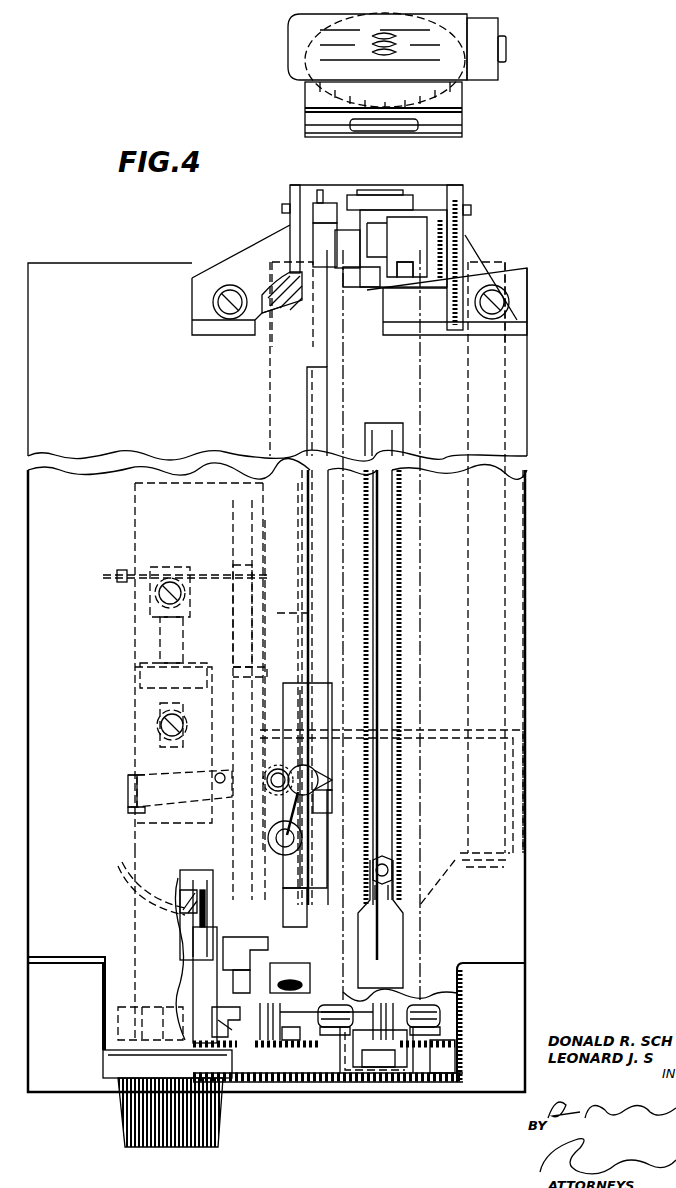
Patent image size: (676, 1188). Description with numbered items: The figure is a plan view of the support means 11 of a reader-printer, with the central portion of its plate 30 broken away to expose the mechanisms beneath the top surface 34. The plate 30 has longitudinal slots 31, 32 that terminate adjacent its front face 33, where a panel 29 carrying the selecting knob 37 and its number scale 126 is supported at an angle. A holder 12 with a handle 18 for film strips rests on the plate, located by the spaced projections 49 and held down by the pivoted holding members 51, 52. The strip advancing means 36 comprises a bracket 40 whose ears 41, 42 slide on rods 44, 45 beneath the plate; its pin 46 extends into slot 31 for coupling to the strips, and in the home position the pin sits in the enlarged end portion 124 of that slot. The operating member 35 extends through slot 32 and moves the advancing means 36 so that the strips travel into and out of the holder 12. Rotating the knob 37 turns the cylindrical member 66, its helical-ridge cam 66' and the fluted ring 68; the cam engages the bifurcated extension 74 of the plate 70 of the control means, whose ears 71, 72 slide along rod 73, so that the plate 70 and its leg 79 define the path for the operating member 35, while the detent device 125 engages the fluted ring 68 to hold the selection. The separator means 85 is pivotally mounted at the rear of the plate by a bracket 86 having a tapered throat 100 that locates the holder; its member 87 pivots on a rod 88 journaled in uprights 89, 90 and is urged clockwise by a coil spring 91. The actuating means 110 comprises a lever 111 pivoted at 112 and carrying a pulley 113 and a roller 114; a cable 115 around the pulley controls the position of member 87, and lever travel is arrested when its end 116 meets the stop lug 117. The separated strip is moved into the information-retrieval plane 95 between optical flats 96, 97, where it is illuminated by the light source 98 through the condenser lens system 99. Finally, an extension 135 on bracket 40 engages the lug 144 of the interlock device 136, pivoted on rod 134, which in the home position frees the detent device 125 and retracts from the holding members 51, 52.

The support means 11 is at (530, 512).
The holder 12 is at (402, 672).
The handle portion 18 is at (385, 1082).
The panel 29 is at (440, 1082).
The plate 30 is at (495, 912).
The slot 31 is at (388, 500).
The slot 32 is at (333, 503).
The front face 33 is at (463, 1062).
The top surface 34 is at (158, 384).
The operating member 35 is at (316, 762).
The strip advancing means 36 is at (436, 890).
The selecting knob 37 is at (223, 1122).
The bracket 40 is at (489, 795).
The ear 41 is at (512, 724).
The ear 42 is at (302, 730).
The rod 44 is at (485, 406).
The rod 45 is at (292, 405).
The pin 46 is at (388, 868).
The spaced projections 49 is at (440, 1004).
The holding member 51 is at (432, 1030).
The holding member 52 is at (318, 1050).
The cylindrical member 66 is at (112, 945).
The helical-ridge cam 66' is at (137, 882).
The fluted ring 68 is at (125, 1018).
The plate 70 is at (205, 687).
The ear 71 is at (232, 668).
The ear 72 is at (225, 965).
The rod 73 is at (240, 640).
The bifurcated extension 74 is at (190, 880).
The leg 79 is at (318, 811).
The separator means 85 is at (468, 180).
The bracket 86 is at (258, 252).
The member 87 is at (396, 187).
The rod 88 is at (345, 170).
The upright 89 is at (466, 226).
The upright 90 is at (290, 222).
The coil spring 91 is at (307, 190).
The information-retrieval plane 95 is at (466, 125).
The optical flat 96 is at (462, 135).
The optical flat 97 is at (462, 118).
The light source 98 is at (292, 44).
The condenser lens system 99 is at (318, 87).
The tapered throat 100 is at (413, 264).
The actuating means 110 is at (126, 784).
The lever 111 is at (170, 787).
The pivot 112 is at (215, 776).
The pulley 113 is at (272, 791).
The roller 114 is at (303, 838).
The cable 115 is at (307, 303).
The end 116 is at (130, 770).
The stop lug 117 is at (128, 800).
The enlarged end portion 124 is at (395, 944).
The detent device 125 is at (236, 1020).
The number scale 126 is at (110, 1064).
The rod 134 is at (292, 1040).
The extension 135 is at (203, 945).
The interlock device 136 is at (330, 1052).
The lug 144 is at (244, 1042).